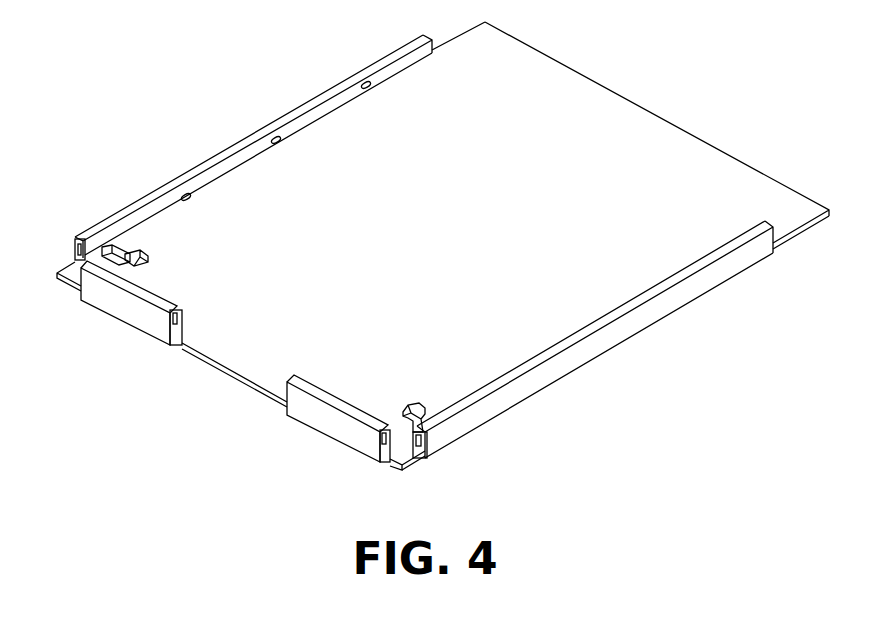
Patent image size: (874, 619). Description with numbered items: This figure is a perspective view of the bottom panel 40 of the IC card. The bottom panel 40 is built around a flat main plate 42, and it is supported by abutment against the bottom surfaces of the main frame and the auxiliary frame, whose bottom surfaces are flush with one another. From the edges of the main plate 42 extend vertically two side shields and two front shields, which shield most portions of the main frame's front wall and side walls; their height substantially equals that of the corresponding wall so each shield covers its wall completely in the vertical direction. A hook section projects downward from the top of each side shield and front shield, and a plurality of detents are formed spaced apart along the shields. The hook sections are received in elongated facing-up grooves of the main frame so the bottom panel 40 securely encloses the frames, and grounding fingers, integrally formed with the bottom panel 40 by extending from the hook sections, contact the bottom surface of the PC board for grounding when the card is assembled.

The bottom panel 40 is at (752, 405).
The main plate 42 is at (447, 270).